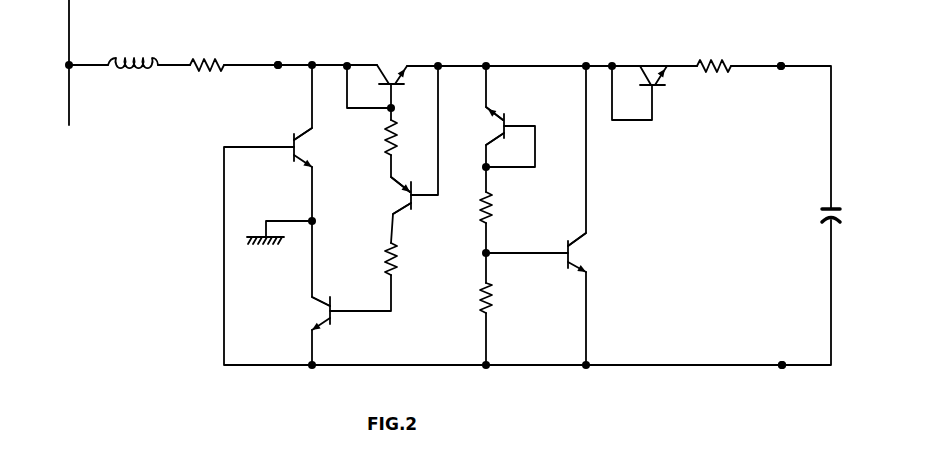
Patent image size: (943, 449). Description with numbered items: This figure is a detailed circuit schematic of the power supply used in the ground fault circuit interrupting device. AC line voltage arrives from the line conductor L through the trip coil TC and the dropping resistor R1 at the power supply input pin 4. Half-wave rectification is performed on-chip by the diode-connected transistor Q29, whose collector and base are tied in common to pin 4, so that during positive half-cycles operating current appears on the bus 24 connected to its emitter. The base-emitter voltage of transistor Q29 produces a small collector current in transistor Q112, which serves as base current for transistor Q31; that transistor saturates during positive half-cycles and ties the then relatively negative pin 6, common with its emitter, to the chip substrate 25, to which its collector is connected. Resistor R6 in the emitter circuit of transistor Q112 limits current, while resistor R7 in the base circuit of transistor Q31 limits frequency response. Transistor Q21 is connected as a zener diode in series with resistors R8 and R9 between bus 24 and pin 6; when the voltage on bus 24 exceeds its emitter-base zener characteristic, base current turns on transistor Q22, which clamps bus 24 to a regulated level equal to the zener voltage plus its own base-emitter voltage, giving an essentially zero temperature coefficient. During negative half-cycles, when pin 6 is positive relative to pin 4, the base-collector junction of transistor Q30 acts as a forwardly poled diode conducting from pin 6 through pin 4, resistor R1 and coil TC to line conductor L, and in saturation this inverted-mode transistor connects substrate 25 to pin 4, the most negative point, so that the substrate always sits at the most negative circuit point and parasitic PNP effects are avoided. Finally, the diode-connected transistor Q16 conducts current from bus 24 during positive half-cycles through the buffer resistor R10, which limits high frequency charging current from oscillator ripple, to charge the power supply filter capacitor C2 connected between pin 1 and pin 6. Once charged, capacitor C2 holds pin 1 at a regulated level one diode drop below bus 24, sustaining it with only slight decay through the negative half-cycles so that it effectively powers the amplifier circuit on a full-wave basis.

The line conductor L is at (85, 62).
The trip coil TC is at (133, 42).
The dropping resistor R1 is at (207, 43).
The power supply input pin 4 is at (277, 54).
The transistor Q30 is at (277, 133).
The chip substrate 25 is at (263, 267).
The transistor Q31 is at (351, 324).
The diode-connected transistor Q29 is at (392, 62).
The resistor R6 is at (367, 136).
The transistor Q112 is at (369, 195).
The resistor R7 is at (367, 258).
The bus 24 is at (513, 42).
The transistor Q21 is at (520, 113).
The resistor R8 is at (512, 206).
The resistor R9 is at (510, 298).
The transistor Q22 is at (606, 252).
The diode-connected transistor Q16 is at (649, 53).
The buffer resistor R10 is at (717, 44).
The pin 1 is at (782, 57).
The power supply filter capacitor C2 is at (855, 212).
The pin 6 is at (782, 376).